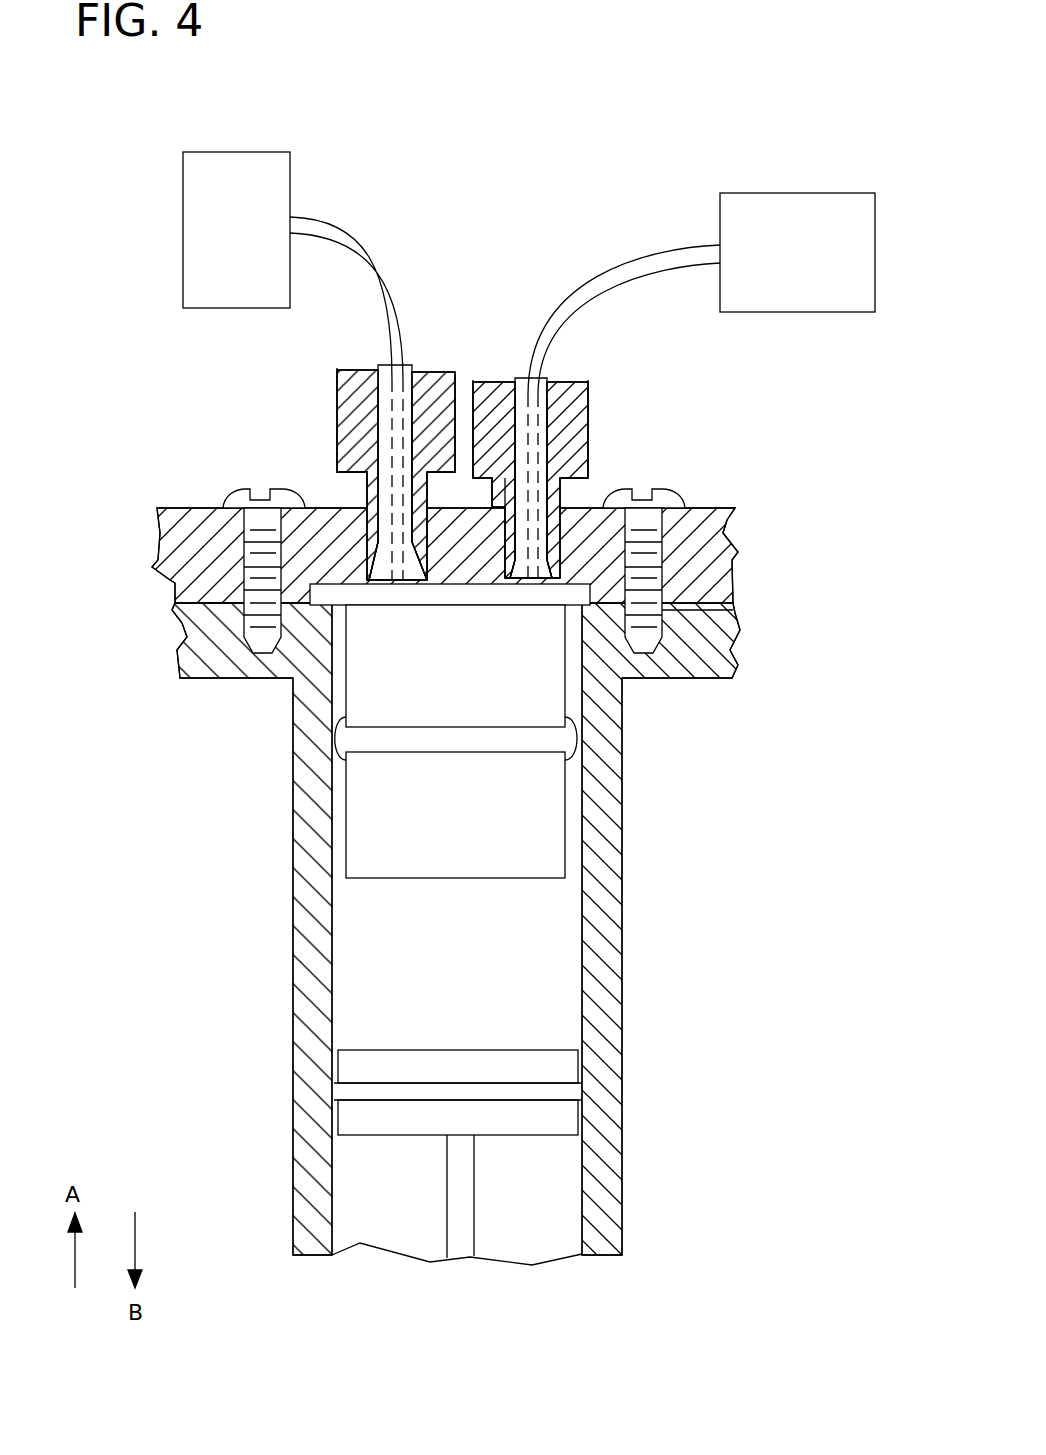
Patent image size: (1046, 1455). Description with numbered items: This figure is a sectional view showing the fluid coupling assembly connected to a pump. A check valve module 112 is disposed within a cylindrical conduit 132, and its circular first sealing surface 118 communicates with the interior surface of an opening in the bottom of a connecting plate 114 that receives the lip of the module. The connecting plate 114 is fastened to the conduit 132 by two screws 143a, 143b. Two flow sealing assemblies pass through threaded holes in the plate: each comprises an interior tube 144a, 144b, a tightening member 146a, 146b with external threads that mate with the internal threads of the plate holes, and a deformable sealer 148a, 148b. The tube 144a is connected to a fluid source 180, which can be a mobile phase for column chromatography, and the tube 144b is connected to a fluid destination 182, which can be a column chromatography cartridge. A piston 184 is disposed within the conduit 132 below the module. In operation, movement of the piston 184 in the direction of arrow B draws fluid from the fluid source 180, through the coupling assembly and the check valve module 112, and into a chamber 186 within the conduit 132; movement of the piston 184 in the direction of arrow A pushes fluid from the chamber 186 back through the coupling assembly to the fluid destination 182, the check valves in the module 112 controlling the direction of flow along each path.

The connecting plate 114 is at (176, 560).
The cylindrical conduit 132 is at (303, 830).
The screw 143a is at (240, 490).
The screw 143b is at (680, 491).
The tightening member 146a is at (340, 402).
The tightening member 146b is at (590, 420).
The deformable sealer 148a is at (365, 525).
The deformable sealer 148b is at (578, 518).
The first sealing surface 118 is at (488, 590).
The check valve module 112 is at (538, 817).
The chamber 186 is at (528, 970).
The piston 184 is at (562, 1112).
The fluid source 180 is at (243, 165).
The fluid destination 182 is at (777, 200).
The interior tube 144a is at (363, 243).
The interior tube 144b is at (617, 267).